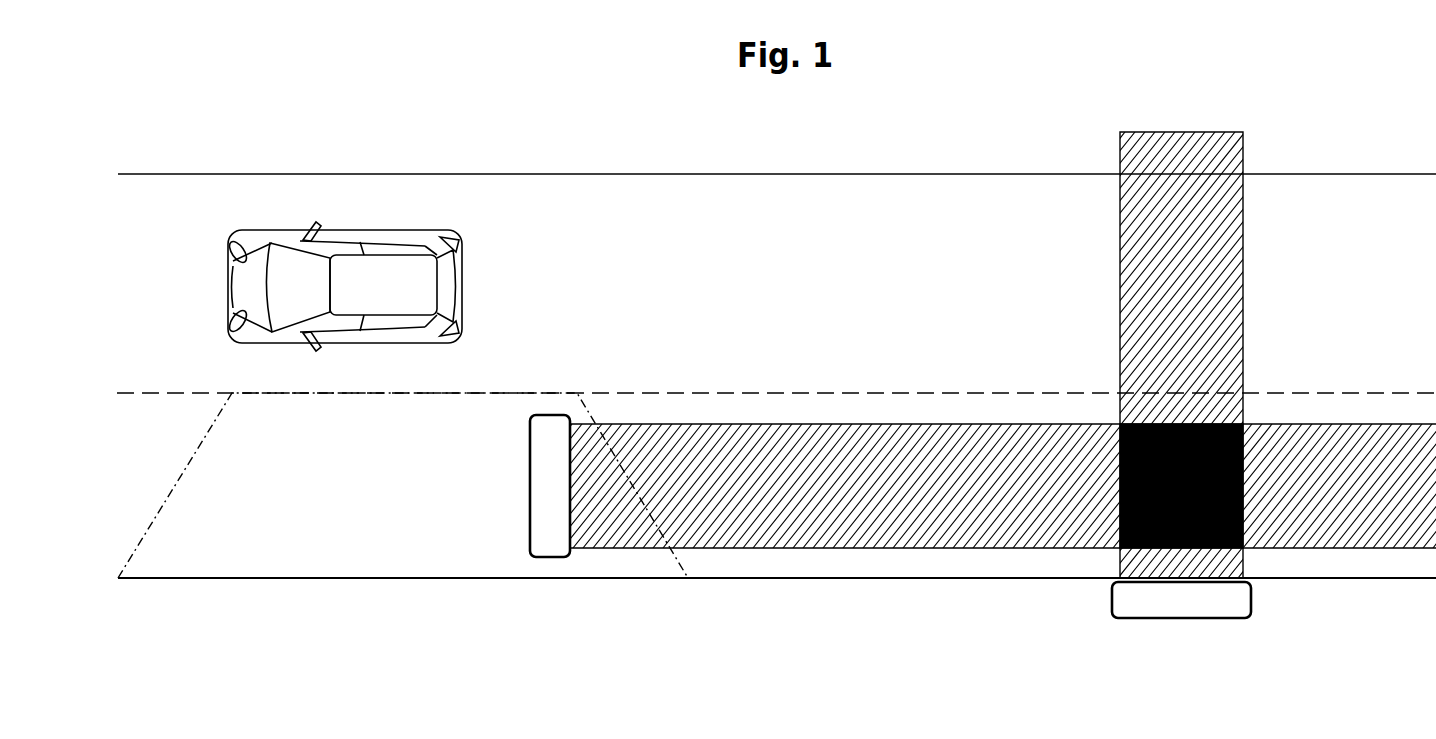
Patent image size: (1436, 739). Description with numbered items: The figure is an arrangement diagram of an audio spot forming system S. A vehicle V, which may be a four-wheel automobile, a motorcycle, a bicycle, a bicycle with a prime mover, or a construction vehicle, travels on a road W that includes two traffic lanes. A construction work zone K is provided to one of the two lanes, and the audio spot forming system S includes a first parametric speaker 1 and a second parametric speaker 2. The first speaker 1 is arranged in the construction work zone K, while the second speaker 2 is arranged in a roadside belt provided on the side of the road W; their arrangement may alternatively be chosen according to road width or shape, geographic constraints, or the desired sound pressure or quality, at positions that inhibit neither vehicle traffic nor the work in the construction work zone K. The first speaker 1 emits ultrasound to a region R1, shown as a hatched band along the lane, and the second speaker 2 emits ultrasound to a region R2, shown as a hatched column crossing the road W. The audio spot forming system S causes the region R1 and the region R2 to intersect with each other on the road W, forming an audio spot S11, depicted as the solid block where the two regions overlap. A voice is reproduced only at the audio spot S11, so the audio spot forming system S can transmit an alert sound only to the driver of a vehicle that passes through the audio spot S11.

The road W is at (823, 212).
The vehicle V is at (417, 285).
The region R1 is at (912, 465).
The region R2 is at (1200, 327).
The first parametric speaker 1 is at (547, 490).
The second parametric speaker 2 is at (1181, 604).
The construction work zone K is at (395, 500).
The audio spot S11 is at (1243, 495).
The audio spot forming system S is at (760, 702).